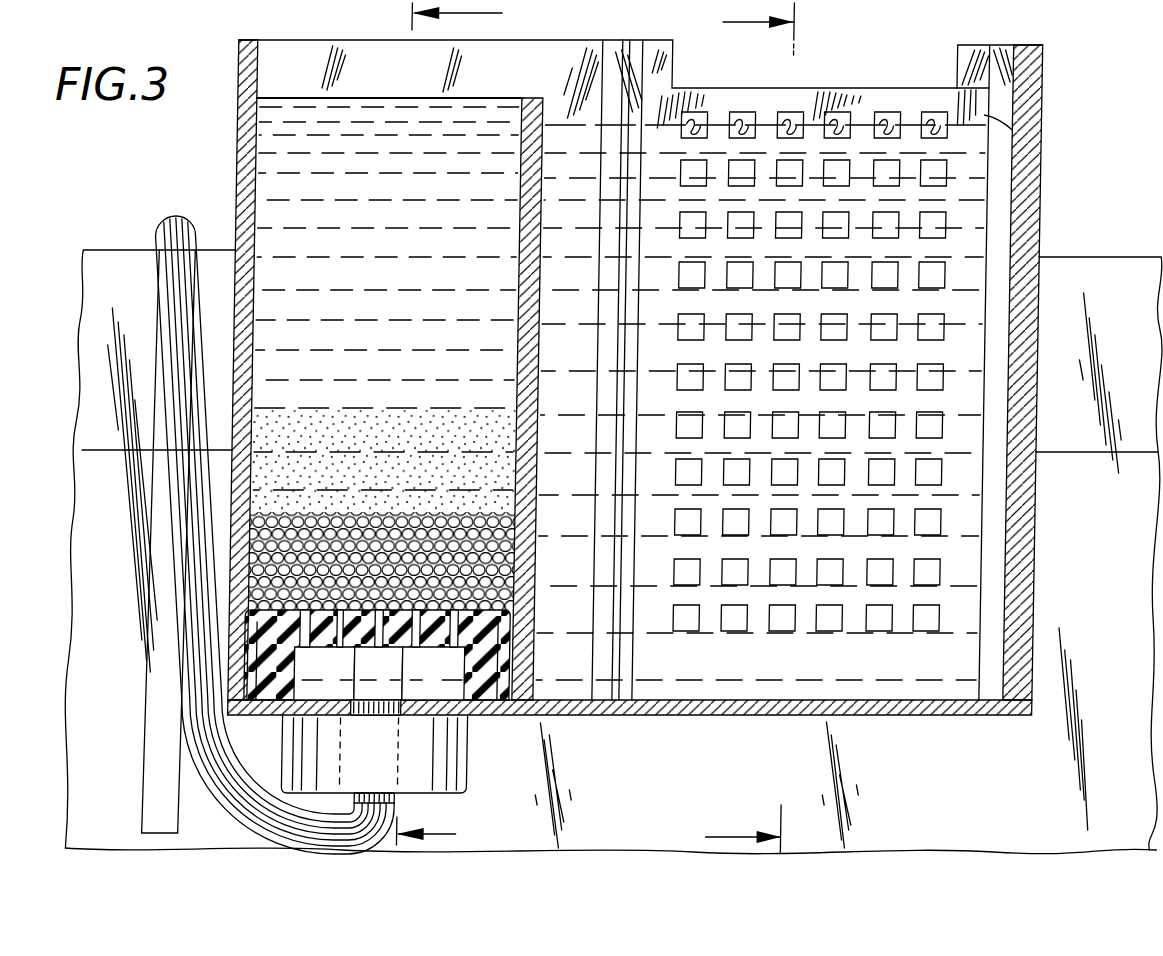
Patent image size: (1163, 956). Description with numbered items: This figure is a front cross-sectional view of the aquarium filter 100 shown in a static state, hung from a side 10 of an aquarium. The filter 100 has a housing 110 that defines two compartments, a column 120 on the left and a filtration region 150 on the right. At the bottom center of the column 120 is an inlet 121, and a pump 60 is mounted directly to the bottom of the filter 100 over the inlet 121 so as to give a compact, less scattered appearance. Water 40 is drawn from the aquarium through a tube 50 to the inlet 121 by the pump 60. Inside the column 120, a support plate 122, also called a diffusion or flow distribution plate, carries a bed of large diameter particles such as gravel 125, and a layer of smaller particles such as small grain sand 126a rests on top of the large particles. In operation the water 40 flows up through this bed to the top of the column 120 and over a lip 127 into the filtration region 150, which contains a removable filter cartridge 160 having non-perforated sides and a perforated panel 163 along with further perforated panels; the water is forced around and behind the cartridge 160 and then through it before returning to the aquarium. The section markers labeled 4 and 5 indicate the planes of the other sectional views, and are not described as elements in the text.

The side 10 is at (107, 250).
The water 40 is at (410, 350).
The tube 50 is at (170, 216).
The pump 60 is at (392, 751).
The filter 100 is at (661, 36).
The housing 110 is at (560, 50).
The column 120 is at (280, 30).
The inlet 121 is at (385, 718).
The support plate 122 is at (258, 657).
The gravel 125 is at (248, 588).
The small grain sand 126a is at (516, 470).
The lip 127 is at (531, 96).
The filtration region 150 is at (993, 12).
The filter cartridge 160 is at (892, 51).
The perforated panel 163 is at (1037, 165).
The section line 4 is at (742, 428).
The section line 5 is at (457, 426).